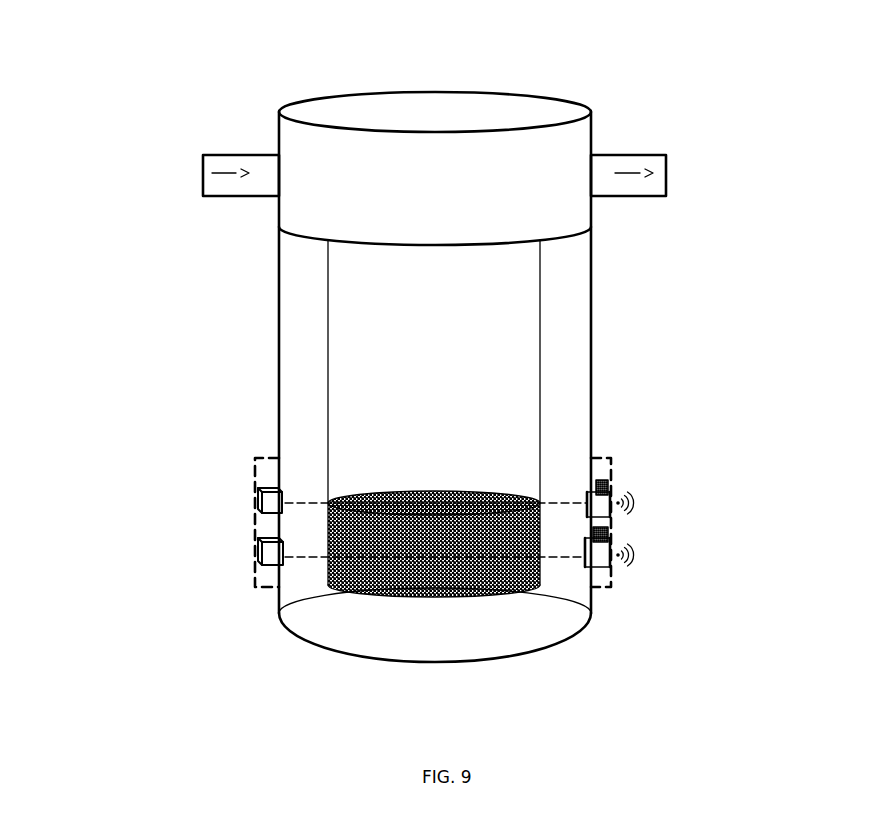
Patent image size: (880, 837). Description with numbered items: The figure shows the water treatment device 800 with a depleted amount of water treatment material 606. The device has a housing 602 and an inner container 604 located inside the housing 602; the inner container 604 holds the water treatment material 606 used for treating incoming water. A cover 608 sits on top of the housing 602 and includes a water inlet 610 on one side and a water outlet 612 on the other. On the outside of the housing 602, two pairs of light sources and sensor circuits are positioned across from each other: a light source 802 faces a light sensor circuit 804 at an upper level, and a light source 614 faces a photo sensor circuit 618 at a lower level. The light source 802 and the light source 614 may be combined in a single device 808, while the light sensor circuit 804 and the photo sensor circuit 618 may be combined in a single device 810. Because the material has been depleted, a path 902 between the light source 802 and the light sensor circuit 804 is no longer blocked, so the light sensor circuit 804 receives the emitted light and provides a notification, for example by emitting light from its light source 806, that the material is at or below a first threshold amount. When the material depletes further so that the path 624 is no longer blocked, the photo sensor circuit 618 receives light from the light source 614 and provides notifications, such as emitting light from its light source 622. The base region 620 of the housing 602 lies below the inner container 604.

The water treatment device 800 is at (116, 50).
The housing 602 is at (278, 275).
The inner container 604 is at (327, 345).
The water treatment material 606 is at (488, 583).
The cover 608 is at (580, 135).
The water inlet 610 is at (224, 192).
The water outlet 612 is at (652, 190).
The light source 614 is at (258, 562).
The photo sensor circuit 618 is at (602, 563).
The base 620 is at (327, 625).
The light source 622 is at (605, 531).
The path 624 is at (566, 568).
The second light source 802 is at (258, 503).
The second light sensor circuit 804 is at (605, 505).
The light source 806 is at (605, 477).
The single device 808 is at (210, 540).
The single device 810 is at (642, 594).
The path 902 is at (571, 495).